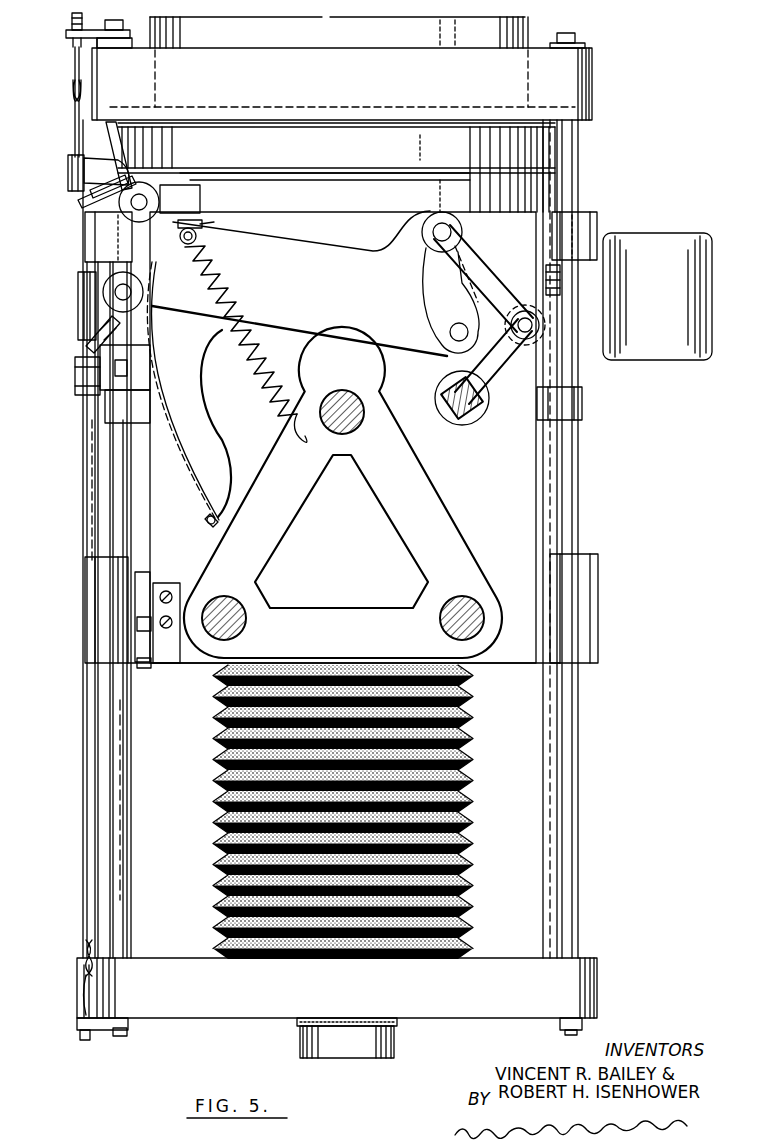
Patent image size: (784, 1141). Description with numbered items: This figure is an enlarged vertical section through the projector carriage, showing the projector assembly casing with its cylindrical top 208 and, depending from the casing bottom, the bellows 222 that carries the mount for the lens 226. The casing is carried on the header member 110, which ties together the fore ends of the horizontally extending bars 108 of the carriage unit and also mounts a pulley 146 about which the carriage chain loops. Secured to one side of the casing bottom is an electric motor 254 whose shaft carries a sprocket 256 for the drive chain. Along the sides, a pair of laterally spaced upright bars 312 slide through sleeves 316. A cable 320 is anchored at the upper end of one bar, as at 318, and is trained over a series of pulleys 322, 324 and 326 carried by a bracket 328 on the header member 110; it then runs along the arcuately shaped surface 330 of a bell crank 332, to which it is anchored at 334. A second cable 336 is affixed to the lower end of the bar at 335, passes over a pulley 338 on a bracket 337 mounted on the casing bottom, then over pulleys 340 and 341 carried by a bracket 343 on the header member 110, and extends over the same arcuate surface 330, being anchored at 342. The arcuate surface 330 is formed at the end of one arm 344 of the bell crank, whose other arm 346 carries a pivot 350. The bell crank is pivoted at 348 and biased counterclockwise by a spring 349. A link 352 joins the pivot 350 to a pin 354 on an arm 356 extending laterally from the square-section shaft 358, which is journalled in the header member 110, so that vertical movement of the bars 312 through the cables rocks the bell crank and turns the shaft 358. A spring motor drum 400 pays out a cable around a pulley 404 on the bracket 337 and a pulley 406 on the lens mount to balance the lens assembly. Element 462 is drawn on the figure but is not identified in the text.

The bars 108 is at (345, 434).
The header member 110 is at (385, 541).
The pulley 146 is at (144, 668).
The cylindrical top 208 is at (530, 28).
The bellows 222 is at (469, 815).
The lens 226 is at (365, 1048).
The electric motor 254 is at (672, 311).
The sprocket 256 is at (550, 290).
The upright bars 312 is at (115, 497).
The sleeve 316 is at (96, 236).
The cable anchor 318 is at (78, 60).
The cable 320 is at (75, 135).
The pulley 322 is at (70, 168).
The pulley 324 is at (82, 203).
The pulley 326 is at (148, 196).
The bracket 328 is at (108, 122).
The arcuately shaped surface 330 is at (147, 336).
The bell crank 332 is at (282, 316).
The cable anchor 334 is at (208, 524).
The cable anchor 335 is at (84, 979).
The cable 336 is at (83, 728).
The bracket 337 is at (118, 358).
The pulley 338 is at (84, 366).
The pulley 340 is at (100, 380).
The pulley 341 is at (106, 282).
The cable anchor 342 is at (229, 216).
The bracket 343 is at (140, 380).
The arm 344 is at (306, 252).
The arm 346 is at (421, 216).
The pivot 348 is at (452, 340).
The spring 349 is at (234, 306).
The pivot 350 is at (440, 240).
The link 352 is at (480, 264).
The pin 354 is at (522, 324).
The arm 356 is at (506, 364).
The shaft 358 is at (462, 425).
The drum 400 is at (80, 297).
The pulley 404 is at (108, 387).
The pulley 406 is at (84, 950).
The guide rail 462 is at (95, 462).